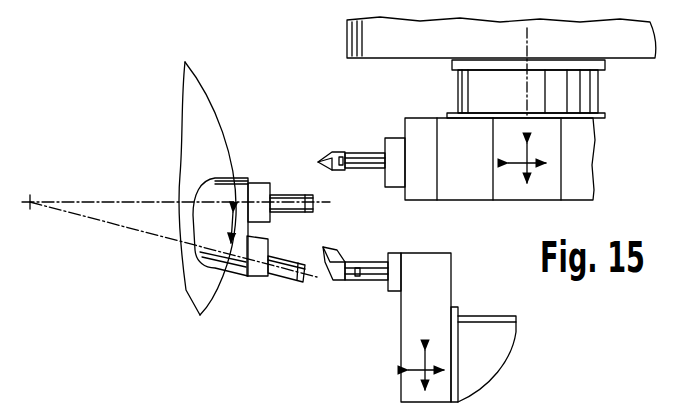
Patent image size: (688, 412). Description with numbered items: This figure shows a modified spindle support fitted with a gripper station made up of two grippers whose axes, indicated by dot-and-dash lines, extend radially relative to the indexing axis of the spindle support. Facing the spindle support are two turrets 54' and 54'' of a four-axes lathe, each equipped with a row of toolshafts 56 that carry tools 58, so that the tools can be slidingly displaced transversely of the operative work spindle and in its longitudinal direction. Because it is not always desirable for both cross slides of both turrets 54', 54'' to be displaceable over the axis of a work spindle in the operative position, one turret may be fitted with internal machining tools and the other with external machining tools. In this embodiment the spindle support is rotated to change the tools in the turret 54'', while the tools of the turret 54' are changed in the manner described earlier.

The tool 58 is at (336, 150).
The toolshaft 56 is at (368, 152).
The turret 54' is at (490, 196).
The turret 54'' is at (414, 327).